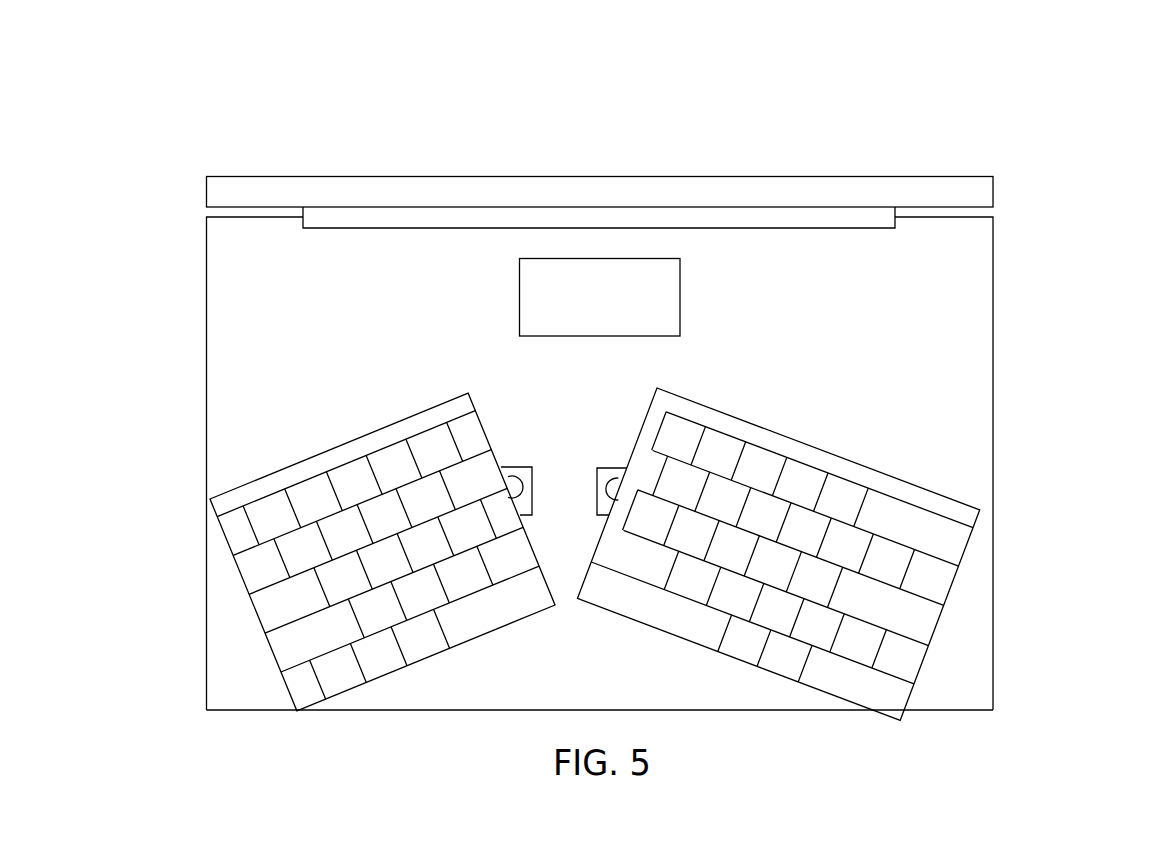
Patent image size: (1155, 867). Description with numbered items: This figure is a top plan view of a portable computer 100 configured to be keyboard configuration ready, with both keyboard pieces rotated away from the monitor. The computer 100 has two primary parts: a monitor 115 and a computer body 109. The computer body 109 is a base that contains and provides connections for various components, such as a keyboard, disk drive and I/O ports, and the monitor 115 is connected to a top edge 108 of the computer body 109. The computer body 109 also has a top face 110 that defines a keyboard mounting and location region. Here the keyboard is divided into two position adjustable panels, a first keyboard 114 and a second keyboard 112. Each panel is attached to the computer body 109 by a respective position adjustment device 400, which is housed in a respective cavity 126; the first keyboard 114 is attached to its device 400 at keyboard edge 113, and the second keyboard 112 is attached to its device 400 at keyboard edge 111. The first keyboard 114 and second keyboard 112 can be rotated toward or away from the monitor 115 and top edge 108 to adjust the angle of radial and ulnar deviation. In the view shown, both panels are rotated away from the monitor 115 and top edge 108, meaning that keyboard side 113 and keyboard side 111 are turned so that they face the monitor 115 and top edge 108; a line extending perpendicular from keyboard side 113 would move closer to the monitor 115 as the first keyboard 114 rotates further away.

The computer 100 is at (982, 88).
The top edge 108 is at (255, 217).
The computer body 109 is at (233, 722).
The top face 110 is at (975, 677).
The keyboard edge 111 is at (643, 424).
The second keyboard 112 is at (961, 520).
The keyboard edge 113 is at (485, 430).
The first keyboard 114 is at (225, 508).
The monitor 115 is at (615, 190).
The device 400 is at (530, 460).
The cavity 126 is at (601, 460).